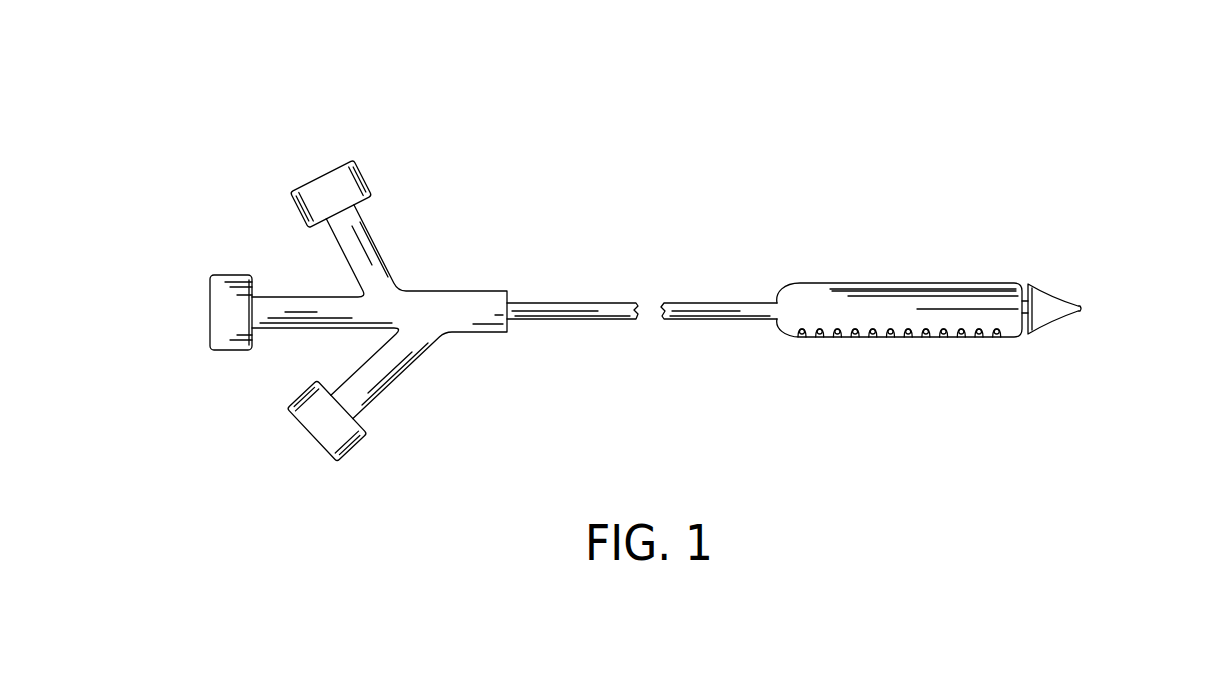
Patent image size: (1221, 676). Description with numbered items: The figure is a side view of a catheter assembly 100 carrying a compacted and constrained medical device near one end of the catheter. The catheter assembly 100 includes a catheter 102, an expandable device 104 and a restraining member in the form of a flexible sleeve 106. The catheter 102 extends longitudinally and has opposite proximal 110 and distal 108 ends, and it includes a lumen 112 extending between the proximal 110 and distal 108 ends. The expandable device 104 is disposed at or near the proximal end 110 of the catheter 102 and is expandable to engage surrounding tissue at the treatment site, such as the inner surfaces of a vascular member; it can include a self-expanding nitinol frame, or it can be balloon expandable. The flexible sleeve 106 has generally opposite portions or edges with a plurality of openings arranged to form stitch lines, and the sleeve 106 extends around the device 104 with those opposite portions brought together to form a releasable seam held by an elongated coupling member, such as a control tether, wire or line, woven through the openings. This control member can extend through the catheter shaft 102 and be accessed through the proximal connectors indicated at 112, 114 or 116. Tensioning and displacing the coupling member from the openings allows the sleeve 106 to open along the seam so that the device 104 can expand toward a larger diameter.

The catheter assembly 100 is at (600, 96).
The catheter 102 is at (557, 302).
The expandable device 104 is at (903, 283).
The flexible sleeve 106 is at (990, 282).
The distal end 108 is at (210, 309).
The proximal end 110 is at (1082, 307).
The lumen 112 is at (210, 330).
The proximal connector 114 is at (320, 176).
The proximal connector 116 is at (308, 431).